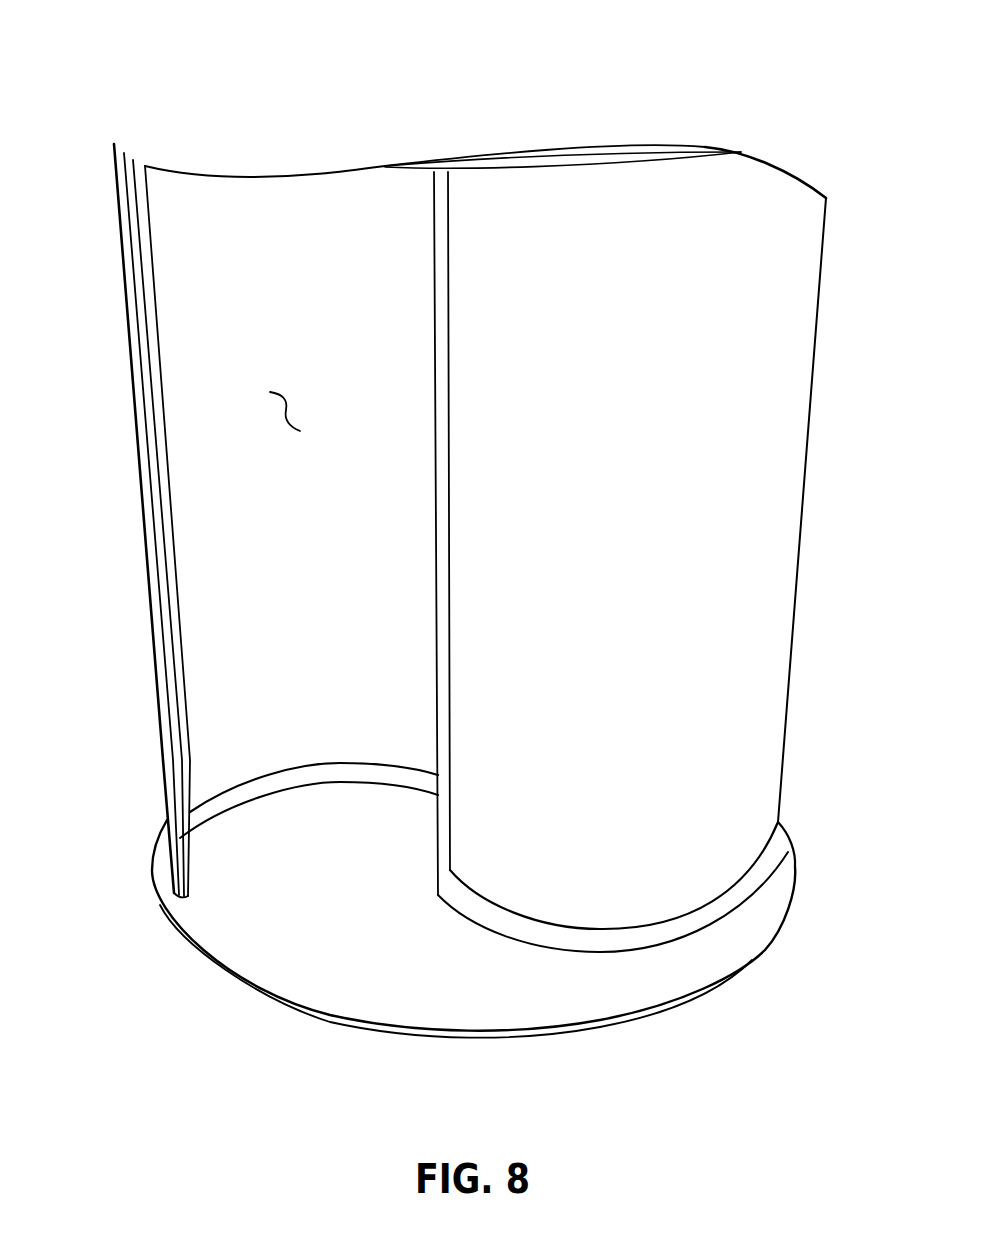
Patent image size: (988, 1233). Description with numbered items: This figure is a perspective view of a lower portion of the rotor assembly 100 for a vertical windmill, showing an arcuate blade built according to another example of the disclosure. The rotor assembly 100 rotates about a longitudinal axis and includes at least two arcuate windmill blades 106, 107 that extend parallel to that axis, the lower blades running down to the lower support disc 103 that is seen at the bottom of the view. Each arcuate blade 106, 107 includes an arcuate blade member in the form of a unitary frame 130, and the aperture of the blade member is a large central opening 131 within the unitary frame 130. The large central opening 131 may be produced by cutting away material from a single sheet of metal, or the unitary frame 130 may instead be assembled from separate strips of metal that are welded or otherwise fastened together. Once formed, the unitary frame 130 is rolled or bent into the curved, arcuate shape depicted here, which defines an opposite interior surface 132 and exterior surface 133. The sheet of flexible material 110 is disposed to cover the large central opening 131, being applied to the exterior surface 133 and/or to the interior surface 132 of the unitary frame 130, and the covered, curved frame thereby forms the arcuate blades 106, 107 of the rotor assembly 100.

The rotor assembly 100 is at (735, 100).
The lower support disc 103 is at (655, 988).
The arcuate windmill blade 106 is at (123, 225).
The arcuate windmill blade 107 is at (801, 213).
The sheet of flexible material 110 is at (250, 217).
The unitary frame 130 is at (148, 548).
The large central opening 131 is at (284, 410).
The interior surface 132 is at (228, 807).
The exterior surface 133 is at (170, 875).